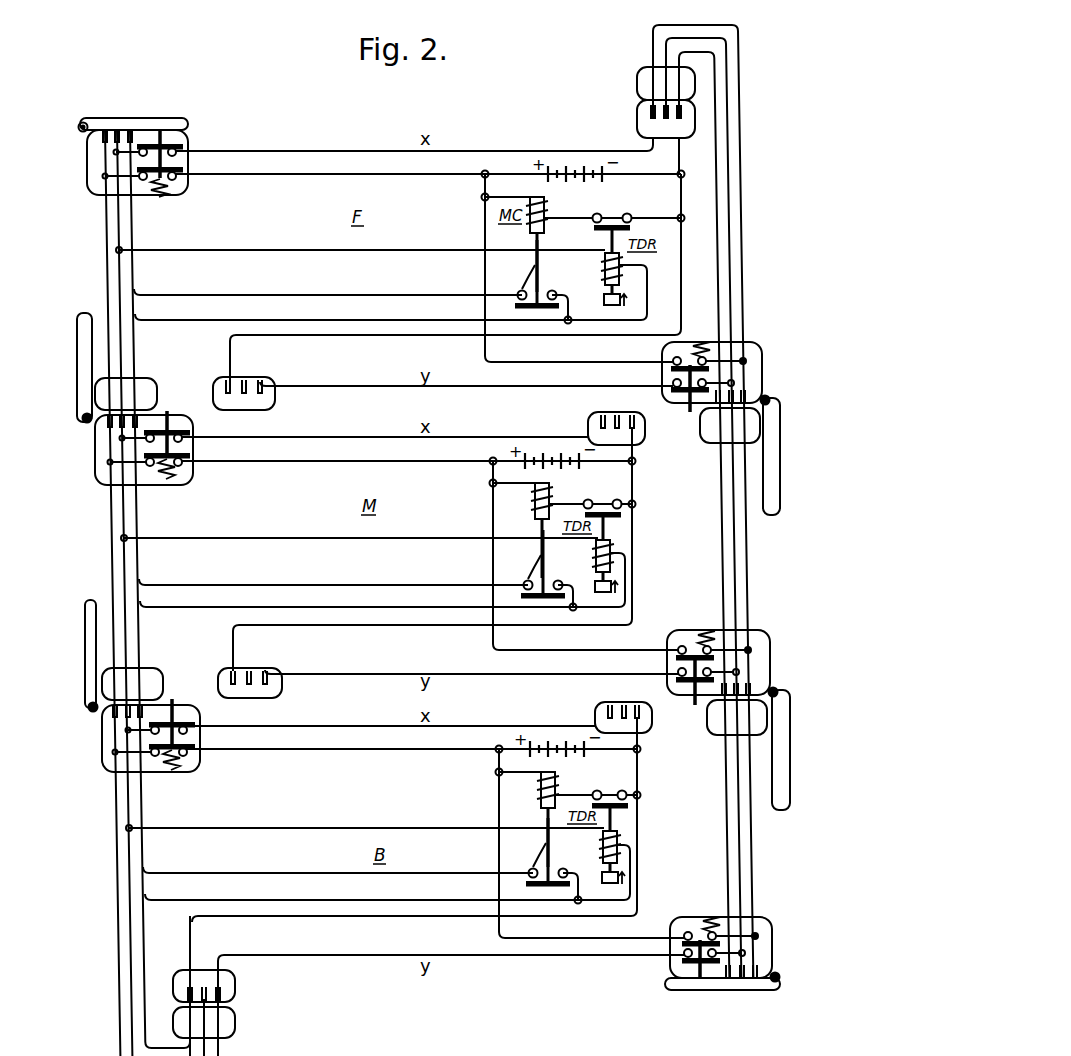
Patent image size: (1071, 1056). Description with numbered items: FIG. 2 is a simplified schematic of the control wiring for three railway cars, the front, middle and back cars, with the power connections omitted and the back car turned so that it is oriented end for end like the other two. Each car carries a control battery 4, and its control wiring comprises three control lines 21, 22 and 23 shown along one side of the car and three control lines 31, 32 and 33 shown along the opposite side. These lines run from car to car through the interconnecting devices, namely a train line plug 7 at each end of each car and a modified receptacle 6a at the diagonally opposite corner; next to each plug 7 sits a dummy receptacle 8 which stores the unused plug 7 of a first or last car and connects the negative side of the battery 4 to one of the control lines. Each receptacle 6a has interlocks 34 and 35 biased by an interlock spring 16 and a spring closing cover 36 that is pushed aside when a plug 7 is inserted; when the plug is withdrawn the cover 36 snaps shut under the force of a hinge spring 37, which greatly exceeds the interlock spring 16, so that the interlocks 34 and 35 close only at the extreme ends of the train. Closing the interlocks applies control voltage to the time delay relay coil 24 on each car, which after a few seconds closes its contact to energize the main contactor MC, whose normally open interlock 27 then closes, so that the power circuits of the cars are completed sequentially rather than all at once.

The battery 4 is at (605, 178).
The modified receptacle 6a is at (87, 160).
The train line plug 7 is at (637, 85).
The dummy receptacle 8 is at (637, 120).
The interlock spring 16 is at (167, 182).
The control line 21 is at (738, 105).
The control line 22 is at (727, 130).
The control line 23 is at (716, 152).
The time delay relay coil 24 is at (602, 256).
The normally open interlock 27 is at (522, 290).
The control bus 31 is at (106, 206).
The control bus 32 is at (119, 225).
The control line 33 is at (132, 244).
The interlock 34 is at (176, 170).
The interlock 35 is at (158, 186).
The spring closing cover 36 is at (150, 118).
The hinge spring 37 is at (79, 127).